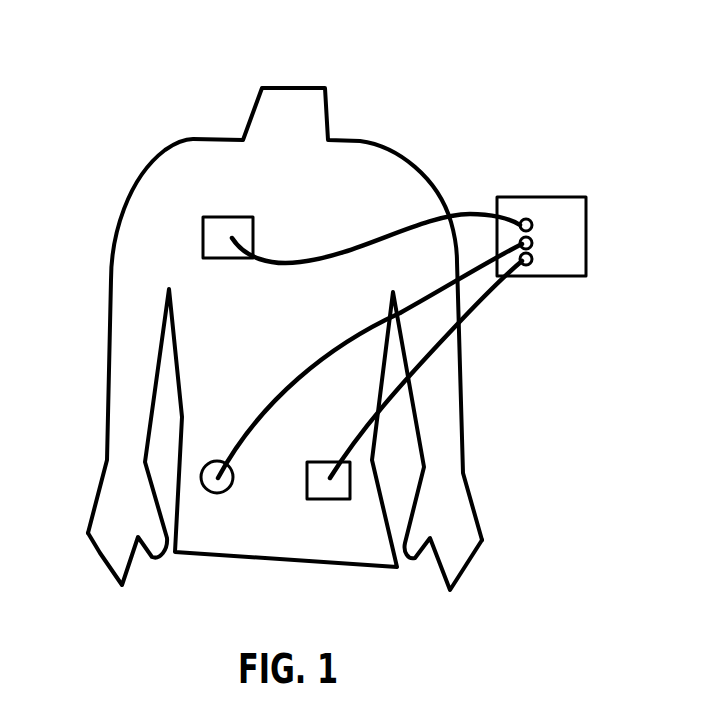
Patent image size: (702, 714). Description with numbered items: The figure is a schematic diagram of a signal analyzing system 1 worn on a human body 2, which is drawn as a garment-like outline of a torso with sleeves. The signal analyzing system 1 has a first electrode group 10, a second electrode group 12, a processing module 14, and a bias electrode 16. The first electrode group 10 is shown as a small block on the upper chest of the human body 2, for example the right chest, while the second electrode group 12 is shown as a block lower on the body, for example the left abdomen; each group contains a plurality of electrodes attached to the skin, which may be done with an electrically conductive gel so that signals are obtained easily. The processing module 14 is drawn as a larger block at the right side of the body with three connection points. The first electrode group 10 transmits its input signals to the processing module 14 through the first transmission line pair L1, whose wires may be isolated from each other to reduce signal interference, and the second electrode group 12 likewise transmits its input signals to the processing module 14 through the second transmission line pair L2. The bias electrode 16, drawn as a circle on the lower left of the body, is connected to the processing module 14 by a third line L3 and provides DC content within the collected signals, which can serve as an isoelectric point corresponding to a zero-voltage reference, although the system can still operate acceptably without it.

The signal analyzing system 1 is at (63, 0).
The human body 2 is at (376, 141).
The first electrode group 10 is at (203, 233).
The second electrode group 12 is at (353, 480).
The processing module 14 is at (553, 277).
The bias electrode 16 is at (200, 478).
The first transmission line pair L1 is at (320, 252).
The second transmission line pair L2 is at (433, 357).
The third cable L3 is at (300, 378).